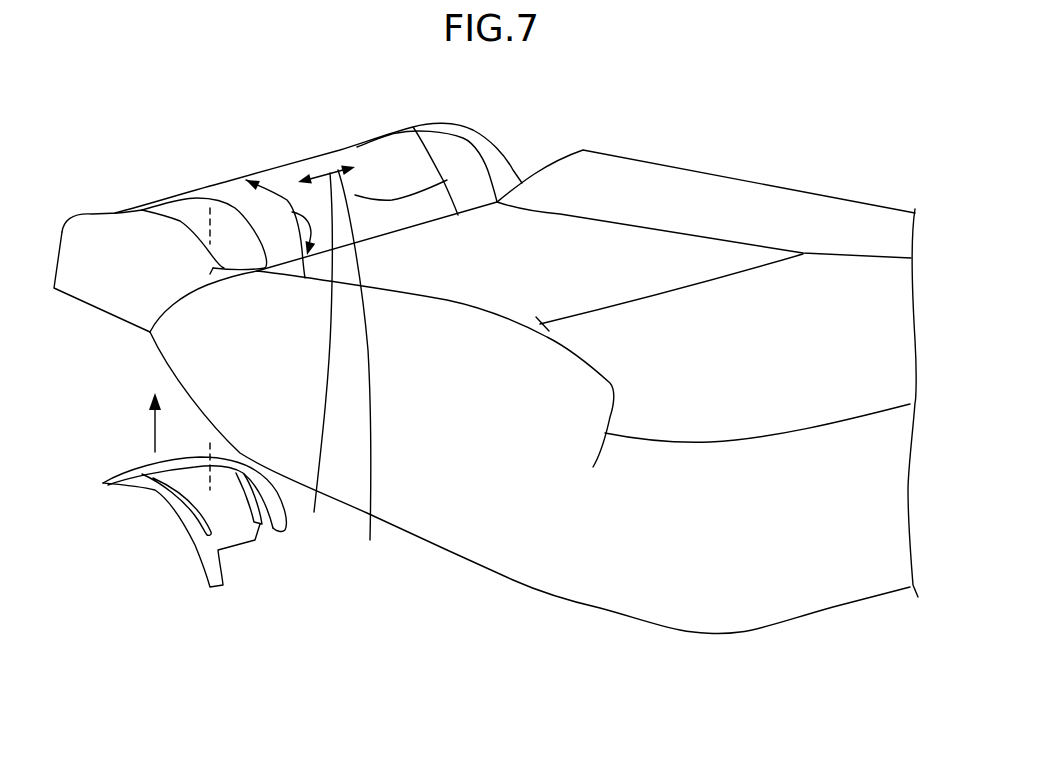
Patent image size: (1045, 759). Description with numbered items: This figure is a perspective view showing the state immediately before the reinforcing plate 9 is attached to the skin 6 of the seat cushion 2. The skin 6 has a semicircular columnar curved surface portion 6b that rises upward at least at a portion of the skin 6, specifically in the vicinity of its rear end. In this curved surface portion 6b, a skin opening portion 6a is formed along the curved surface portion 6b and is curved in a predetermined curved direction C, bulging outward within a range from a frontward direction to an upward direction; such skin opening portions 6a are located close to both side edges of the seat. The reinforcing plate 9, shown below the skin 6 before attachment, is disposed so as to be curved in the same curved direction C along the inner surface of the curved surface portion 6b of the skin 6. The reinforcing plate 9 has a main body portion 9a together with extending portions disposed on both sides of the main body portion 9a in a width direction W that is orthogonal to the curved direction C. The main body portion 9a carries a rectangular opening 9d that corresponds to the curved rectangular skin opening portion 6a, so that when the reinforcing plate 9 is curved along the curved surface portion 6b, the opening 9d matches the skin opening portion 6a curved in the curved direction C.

The seat cushion 2 is at (686, 121).
The skin 6 is at (738, 201).
The skin opening portion 6a is at (424, 137).
The curved surface portion 6b is at (447, 181).
The reinforcing plate 9 is at (128, 537).
The main body portion 9a is at (243, 540).
The rectangular opening 9d is at (240, 514).
The curved direction C is at (319, 364).
The width direction W is at (361, 372).